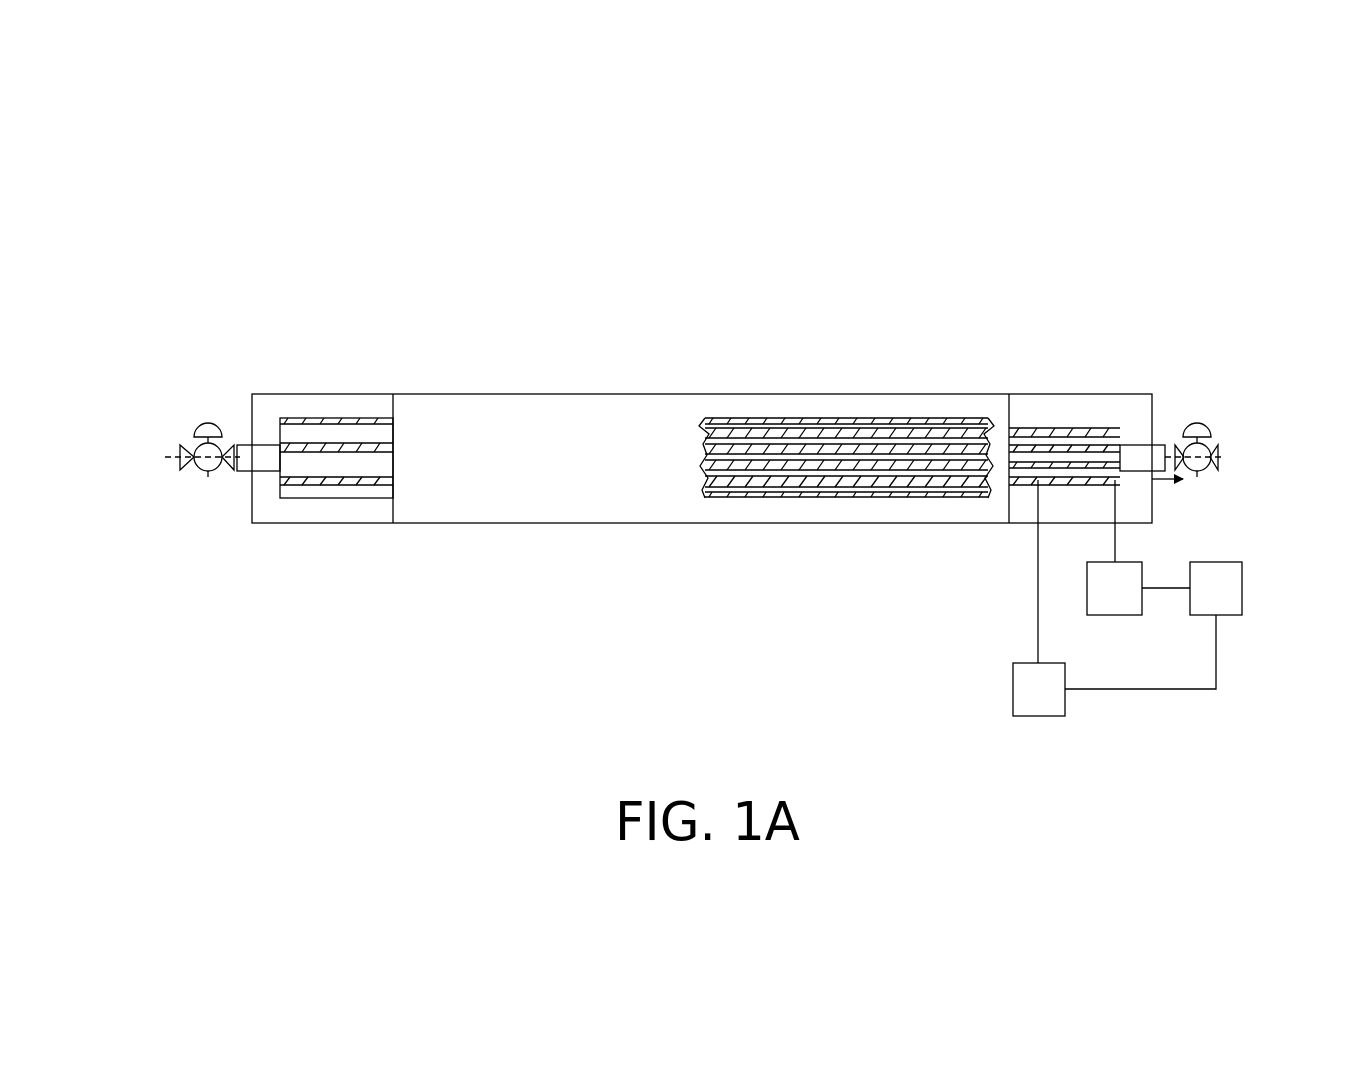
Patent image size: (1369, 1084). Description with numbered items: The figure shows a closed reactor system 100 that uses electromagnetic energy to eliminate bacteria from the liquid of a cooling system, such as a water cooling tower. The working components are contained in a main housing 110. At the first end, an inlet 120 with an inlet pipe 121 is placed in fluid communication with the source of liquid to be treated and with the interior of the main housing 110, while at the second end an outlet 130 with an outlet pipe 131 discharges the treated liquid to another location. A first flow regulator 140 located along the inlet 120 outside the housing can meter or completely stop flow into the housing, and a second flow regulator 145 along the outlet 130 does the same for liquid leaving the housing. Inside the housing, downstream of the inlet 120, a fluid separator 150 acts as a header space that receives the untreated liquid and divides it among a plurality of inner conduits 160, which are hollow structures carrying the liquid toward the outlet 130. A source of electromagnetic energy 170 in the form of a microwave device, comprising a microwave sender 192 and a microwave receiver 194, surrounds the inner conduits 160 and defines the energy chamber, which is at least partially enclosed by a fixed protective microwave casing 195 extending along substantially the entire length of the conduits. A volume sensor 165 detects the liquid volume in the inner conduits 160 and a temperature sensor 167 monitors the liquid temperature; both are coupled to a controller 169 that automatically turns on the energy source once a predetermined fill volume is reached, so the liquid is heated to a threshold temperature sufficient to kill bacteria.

The closed reactor system 100 is at (653, 228).
The main housing 110 is at (312, 393).
The inlet 120 is at (150, 444).
The inlet pipe 121 is at (237, 448).
The outlet 130 is at (1220, 452).
The outlet pipe 131 is at (1158, 445).
The first flow regulator 140 is at (207, 422).
The second flow regulator 145 is at (1197, 422).
The fluid separator 150 is at (343, 418).
The inner conduits 160 is at (880, 425).
The volume sensor 165 is at (1035, 716).
The temperature sensor 167 is at (1143, 570).
The controller 169 is at (1242, 593).
The source of electromagnetic energy 170 is at (737, 504).
The microwave sender 192 is at (765, 418).
The microwave receiver 194 is at (795, 500).
The microwave casing 195 is at (490, 394).